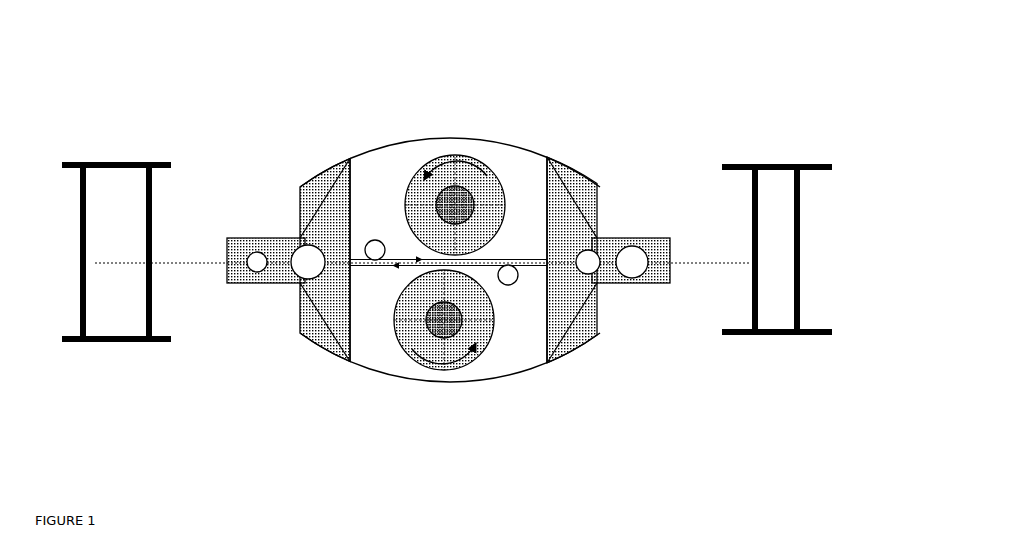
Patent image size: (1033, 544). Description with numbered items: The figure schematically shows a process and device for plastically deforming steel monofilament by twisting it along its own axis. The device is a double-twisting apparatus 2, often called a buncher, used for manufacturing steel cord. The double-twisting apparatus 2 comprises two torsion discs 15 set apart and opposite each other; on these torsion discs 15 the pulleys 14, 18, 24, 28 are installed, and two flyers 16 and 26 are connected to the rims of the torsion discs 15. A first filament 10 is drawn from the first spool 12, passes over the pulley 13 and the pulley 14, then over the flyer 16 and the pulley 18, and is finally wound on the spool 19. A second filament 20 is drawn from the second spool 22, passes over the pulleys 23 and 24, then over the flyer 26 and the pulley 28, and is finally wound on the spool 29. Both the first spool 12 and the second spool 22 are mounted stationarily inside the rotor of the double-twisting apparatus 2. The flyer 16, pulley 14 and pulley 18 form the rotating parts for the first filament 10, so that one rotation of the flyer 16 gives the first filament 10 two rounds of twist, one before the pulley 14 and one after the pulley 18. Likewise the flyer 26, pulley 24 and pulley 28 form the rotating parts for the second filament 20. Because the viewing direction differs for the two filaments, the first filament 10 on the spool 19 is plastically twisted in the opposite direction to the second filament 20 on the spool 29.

The double-twisting apparatus 2 is at (648, 202).
The first filament 10 is at (436, 251).
The first spool 12 is at (488, 197).
The pulley 13 is at (375, 248).
The pulley 14 is at (640, 270).
The torsion discs 15 is at (323, 340).
The flyer 16 is at (402, 145).
The pulley 18 is at (253, 253).
The spool 19 is at (120, 190).
The second filament 20 is at (322, 320).
The second spool 22 is at (412, 308).
The pulley 23 is at (510, 278).
The pulley 24 is at (210, 239).
The flyer 26 is at (435, 383).
The pulley 28 is at (634, 272).
The spool 29 is at (775, 312).